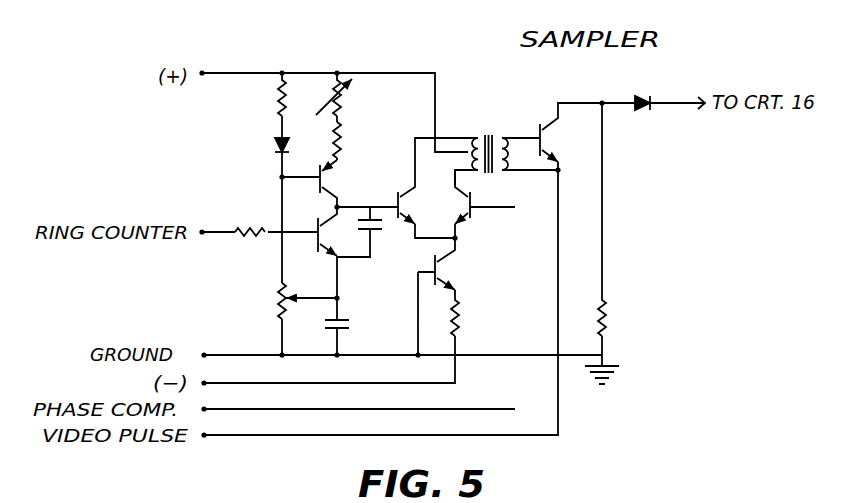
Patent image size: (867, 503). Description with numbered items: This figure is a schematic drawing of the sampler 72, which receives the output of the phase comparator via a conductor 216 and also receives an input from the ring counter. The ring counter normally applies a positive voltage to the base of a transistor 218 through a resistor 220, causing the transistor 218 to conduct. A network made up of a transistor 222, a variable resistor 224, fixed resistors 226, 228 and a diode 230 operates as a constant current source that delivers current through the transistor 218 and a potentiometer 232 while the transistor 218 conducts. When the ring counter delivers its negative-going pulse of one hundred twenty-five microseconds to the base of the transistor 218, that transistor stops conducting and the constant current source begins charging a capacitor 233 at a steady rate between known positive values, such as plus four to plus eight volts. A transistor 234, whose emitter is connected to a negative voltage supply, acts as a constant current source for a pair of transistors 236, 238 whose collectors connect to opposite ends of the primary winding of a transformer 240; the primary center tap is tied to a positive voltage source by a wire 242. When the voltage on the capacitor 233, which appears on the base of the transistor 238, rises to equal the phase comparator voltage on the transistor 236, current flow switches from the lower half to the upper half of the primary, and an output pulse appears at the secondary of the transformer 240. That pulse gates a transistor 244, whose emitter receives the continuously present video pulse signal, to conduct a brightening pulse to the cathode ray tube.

The sampler 72 is at (668, 289).
The conductor 216 is at (437, 409).
The transistor 218 is at (318, 246).
The resistor 220 is at (253, 231).
The transistor 222 is at (330, 188).
The variable resistor 224 is at (343, 98).
The fixed resistor 226 is at (341, 133).
The fixed resistor 228 is at (278, 101).
The diode 230 is at (276, 145).
The potentiometer 232 is at (280, 296).
The capacitor 233 is at (376, 236).
The transistor 234 is at (445, 262).
The transistor 236 is at (475, 200).
The transistor 238 is at (408, 194).
The transformer 240 is at (487, 134).
The wire 242 is at (372, 72).
The transistor 244 is at (546, 128).